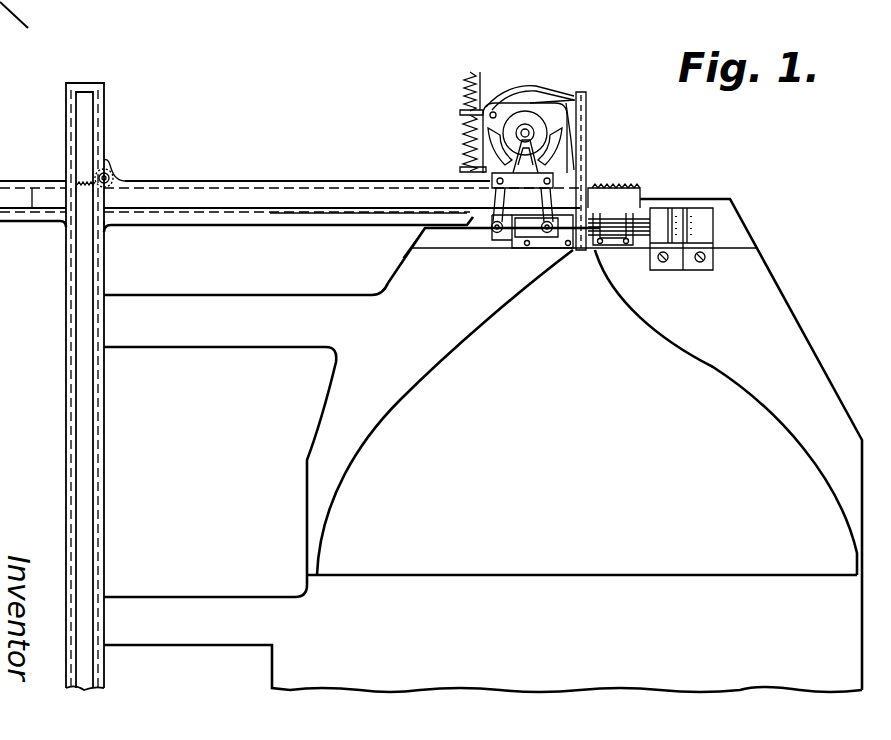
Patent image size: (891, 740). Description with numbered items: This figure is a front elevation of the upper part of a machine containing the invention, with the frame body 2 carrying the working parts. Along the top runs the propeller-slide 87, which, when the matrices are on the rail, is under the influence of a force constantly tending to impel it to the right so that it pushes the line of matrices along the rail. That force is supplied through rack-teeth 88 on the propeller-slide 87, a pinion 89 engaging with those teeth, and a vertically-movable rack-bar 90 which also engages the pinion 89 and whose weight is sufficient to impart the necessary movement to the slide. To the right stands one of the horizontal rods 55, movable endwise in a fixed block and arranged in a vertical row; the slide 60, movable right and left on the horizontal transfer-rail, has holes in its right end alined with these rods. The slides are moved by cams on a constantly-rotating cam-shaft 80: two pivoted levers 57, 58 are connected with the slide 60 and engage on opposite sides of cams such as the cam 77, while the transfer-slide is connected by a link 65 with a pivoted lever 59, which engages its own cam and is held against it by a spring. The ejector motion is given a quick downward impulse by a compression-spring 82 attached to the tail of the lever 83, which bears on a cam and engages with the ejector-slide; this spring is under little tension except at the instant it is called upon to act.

The frame body 2 is at (431, 440).
The horizontal rod 55 is at (643, 215).
The pivoted lever 57 is at (496, 218).
The pivoted lever 58 is at (545, 233).
The pivoted lever 59 is at (530, 84).
The slide 60 is at (510, 232).
The link 65 is at (570, 117).
The cam 77 is at (525, 145).
The cam-shaft 80 is at (527, 142).
The compression-spring 82 is at (464, 142).
The lever 83 is at (542, 103).
The propeller-slide 87 is at (202, 197).
The rack-teeth 88 is at (617, 178).
The pinion 89 is at (109, 176).
The rack-bar 90 is at (87, 444).